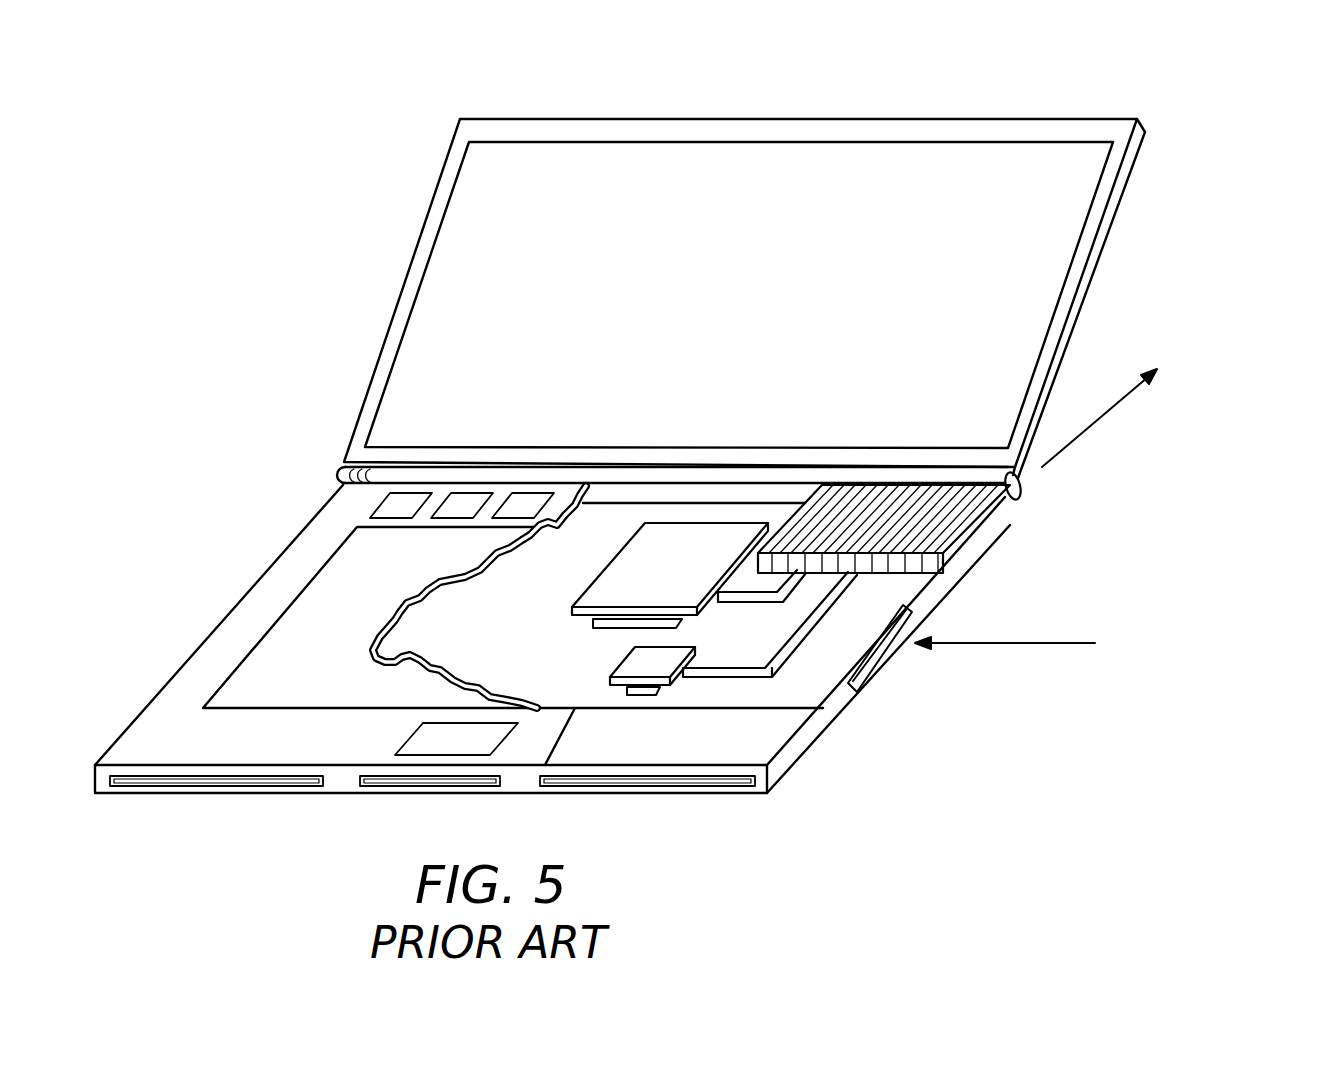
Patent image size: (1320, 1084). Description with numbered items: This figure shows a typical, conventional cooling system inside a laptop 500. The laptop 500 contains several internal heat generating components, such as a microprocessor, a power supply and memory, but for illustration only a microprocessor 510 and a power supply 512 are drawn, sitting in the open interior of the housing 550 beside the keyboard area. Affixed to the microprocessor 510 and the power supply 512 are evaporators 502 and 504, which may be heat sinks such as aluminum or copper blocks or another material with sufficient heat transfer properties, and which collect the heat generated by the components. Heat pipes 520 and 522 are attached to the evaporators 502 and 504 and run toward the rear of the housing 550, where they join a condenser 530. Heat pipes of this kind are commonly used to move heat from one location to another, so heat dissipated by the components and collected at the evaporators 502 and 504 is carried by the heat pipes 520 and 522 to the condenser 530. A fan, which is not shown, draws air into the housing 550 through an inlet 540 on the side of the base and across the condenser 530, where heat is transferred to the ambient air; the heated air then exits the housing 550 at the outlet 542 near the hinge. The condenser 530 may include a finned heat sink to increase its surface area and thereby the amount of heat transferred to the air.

The laptop 500 is at (797, 83).
The evaporator 502 is at (614, 655).
The evaporator 504 is at (622, 553).
The microprocessor 510 is at (660, 690).
The power supply 512 is at (600, 620).
The heat pipe 520 is at (778, 668).
The heat pipe 522 is at (733, 600).
The condenser 530 is at (980, 543).
The inlet 540 is at (878, 660).
The outlet 542 is at (1010, 505).
The housing 550 is at (190, 678).